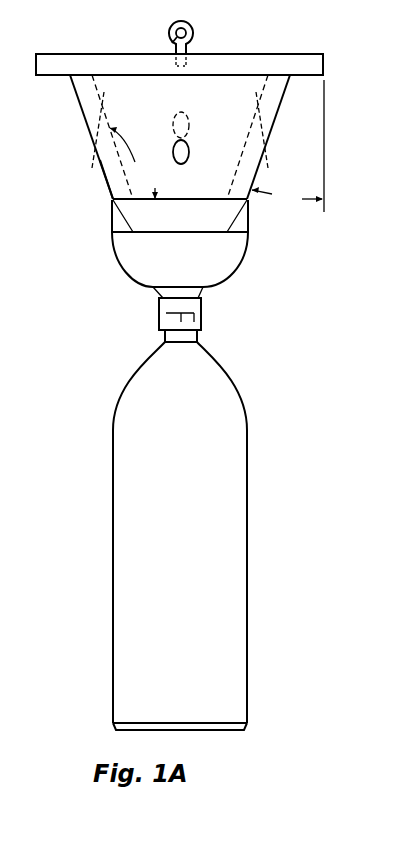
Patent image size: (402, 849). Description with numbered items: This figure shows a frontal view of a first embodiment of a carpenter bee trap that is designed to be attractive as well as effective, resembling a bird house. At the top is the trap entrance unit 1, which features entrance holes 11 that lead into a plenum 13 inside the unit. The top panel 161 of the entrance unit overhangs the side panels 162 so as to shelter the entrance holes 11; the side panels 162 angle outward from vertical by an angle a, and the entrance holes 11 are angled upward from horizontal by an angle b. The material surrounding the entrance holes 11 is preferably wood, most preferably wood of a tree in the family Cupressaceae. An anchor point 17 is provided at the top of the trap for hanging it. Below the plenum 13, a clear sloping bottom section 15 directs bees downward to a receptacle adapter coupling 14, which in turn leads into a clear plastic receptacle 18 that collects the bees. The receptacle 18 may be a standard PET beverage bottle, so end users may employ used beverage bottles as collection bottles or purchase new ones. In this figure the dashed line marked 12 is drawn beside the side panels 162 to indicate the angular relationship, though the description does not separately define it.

The trap entrance unit 1 is at (193, 153).
The entrance holes 11 is at (97, 152).
The pivoted wall position 12 is at (100, 138).
The plenum 13 is at (181, 186).
The receptacle adapter coupling 14 is at (203, 315).
The clear sloping bottom section 15 is at (249, 251).
The top panel 161 is at (293, 52).
The side panels 162 is at (106, 183).
The anchor point 17 is at (198, 28).
The clear plastic receptacle 18 is at (220, 435).